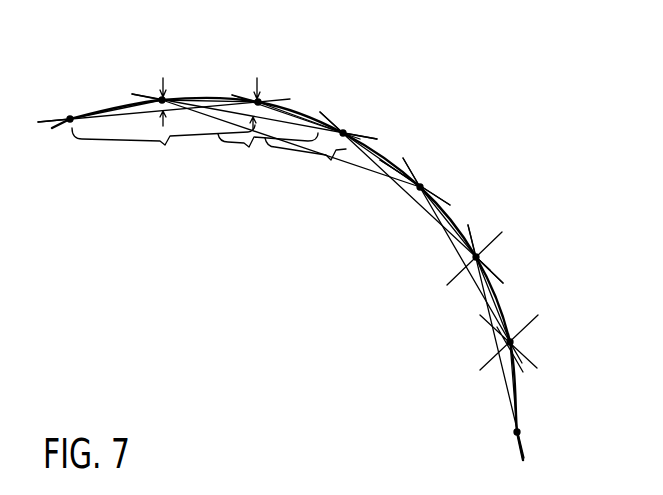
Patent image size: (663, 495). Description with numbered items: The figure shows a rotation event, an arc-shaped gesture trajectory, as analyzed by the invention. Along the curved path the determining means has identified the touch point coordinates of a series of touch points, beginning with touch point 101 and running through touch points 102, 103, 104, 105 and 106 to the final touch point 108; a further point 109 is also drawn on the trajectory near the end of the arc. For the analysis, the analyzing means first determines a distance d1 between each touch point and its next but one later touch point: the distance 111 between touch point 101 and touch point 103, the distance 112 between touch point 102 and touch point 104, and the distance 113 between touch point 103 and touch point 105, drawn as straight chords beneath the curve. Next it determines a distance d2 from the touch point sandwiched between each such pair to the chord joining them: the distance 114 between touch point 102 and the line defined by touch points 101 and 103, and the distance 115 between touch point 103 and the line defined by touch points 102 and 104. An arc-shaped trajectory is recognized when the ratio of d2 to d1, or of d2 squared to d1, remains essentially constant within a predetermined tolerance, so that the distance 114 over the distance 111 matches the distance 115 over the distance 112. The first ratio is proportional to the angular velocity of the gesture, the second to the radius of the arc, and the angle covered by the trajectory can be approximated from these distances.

The touch point 101 is at (70, 124).
The touch point 102 is at (164, 96).
The touch point 103 is at (260, 100).
The touch point 104 is at (346, 130).
The touch point 105 is at (424, 186).
The touch point 106 is at (473, 259).
The touch point 108 is at (514, 433).
The curve point 109 is at (512, 342).
The distance 111 is at (163, 147).
The distance 112 is at (268, 154).
The distance 113 is at (305, 167).
The distance 114 is at (163, 80).
The distance 115 is at (257, 80).